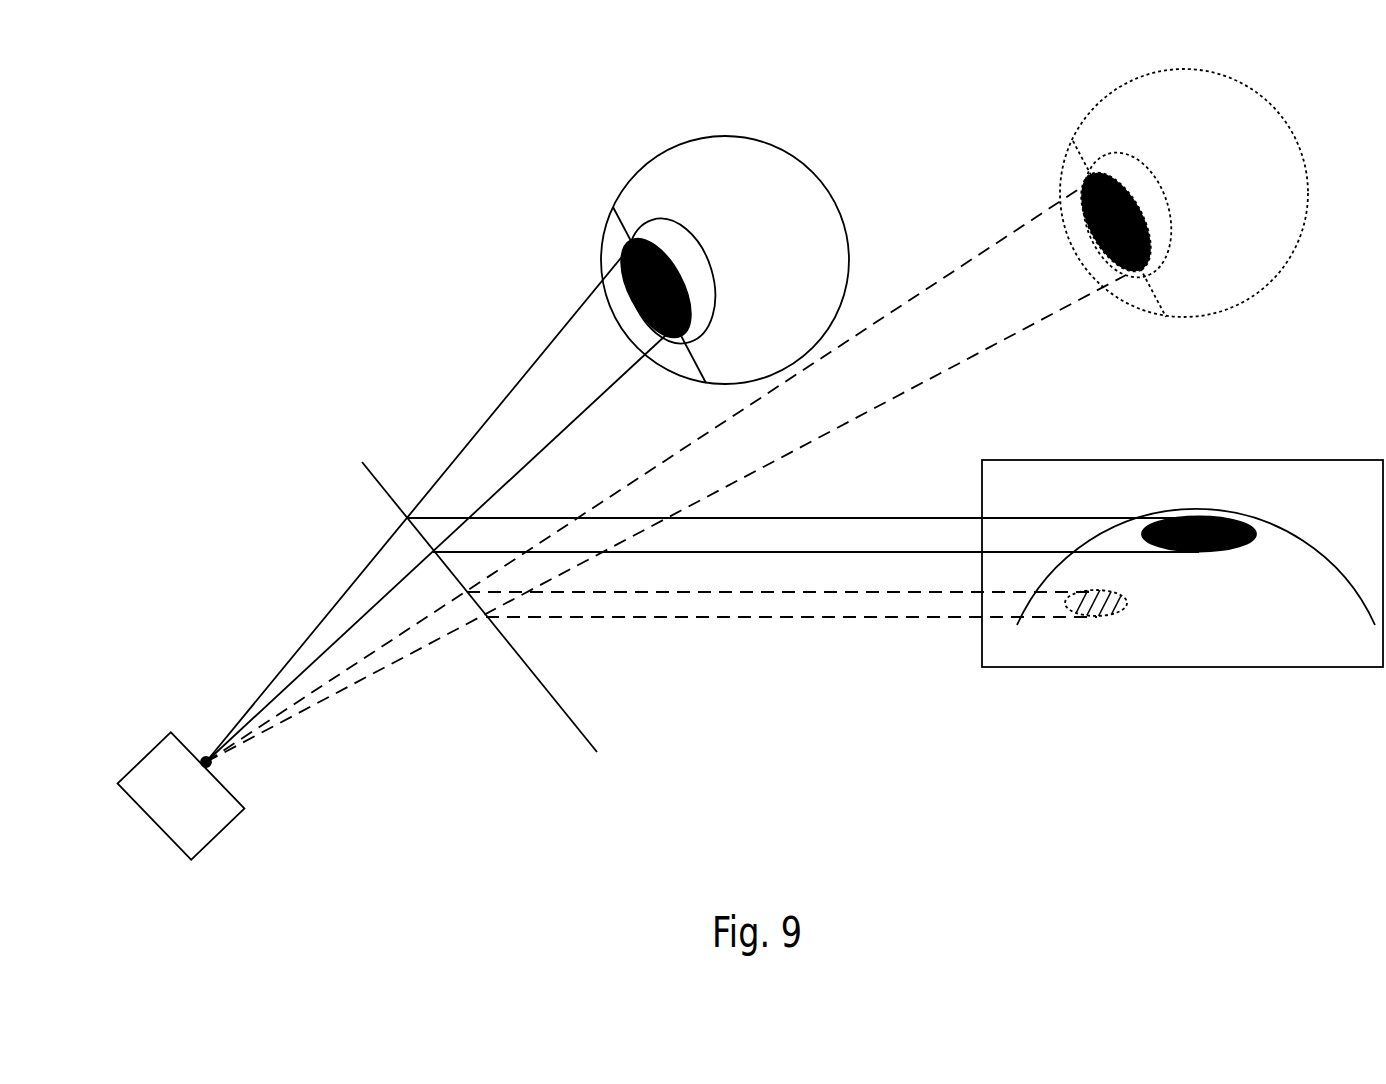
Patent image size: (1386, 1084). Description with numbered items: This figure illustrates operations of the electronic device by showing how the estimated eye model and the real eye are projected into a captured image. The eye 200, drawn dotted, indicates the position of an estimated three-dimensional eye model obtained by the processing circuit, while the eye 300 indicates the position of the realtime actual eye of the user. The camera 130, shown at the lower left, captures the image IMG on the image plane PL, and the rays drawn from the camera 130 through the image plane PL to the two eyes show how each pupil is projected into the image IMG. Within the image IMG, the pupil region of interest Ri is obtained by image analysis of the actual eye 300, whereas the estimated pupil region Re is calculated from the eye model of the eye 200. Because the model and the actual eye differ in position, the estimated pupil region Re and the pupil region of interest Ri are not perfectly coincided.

The eye 300 is at (668, 150).
The eye 200 is at (1096, 110).
The camera 130 is at (181, 796).
The image IMG is at (1343, 458).
The pupil region of interest Ri is at (1227, 552).
The estimated pupil region Re is at (1115, 610).
The image plane PL is at (560, 710).